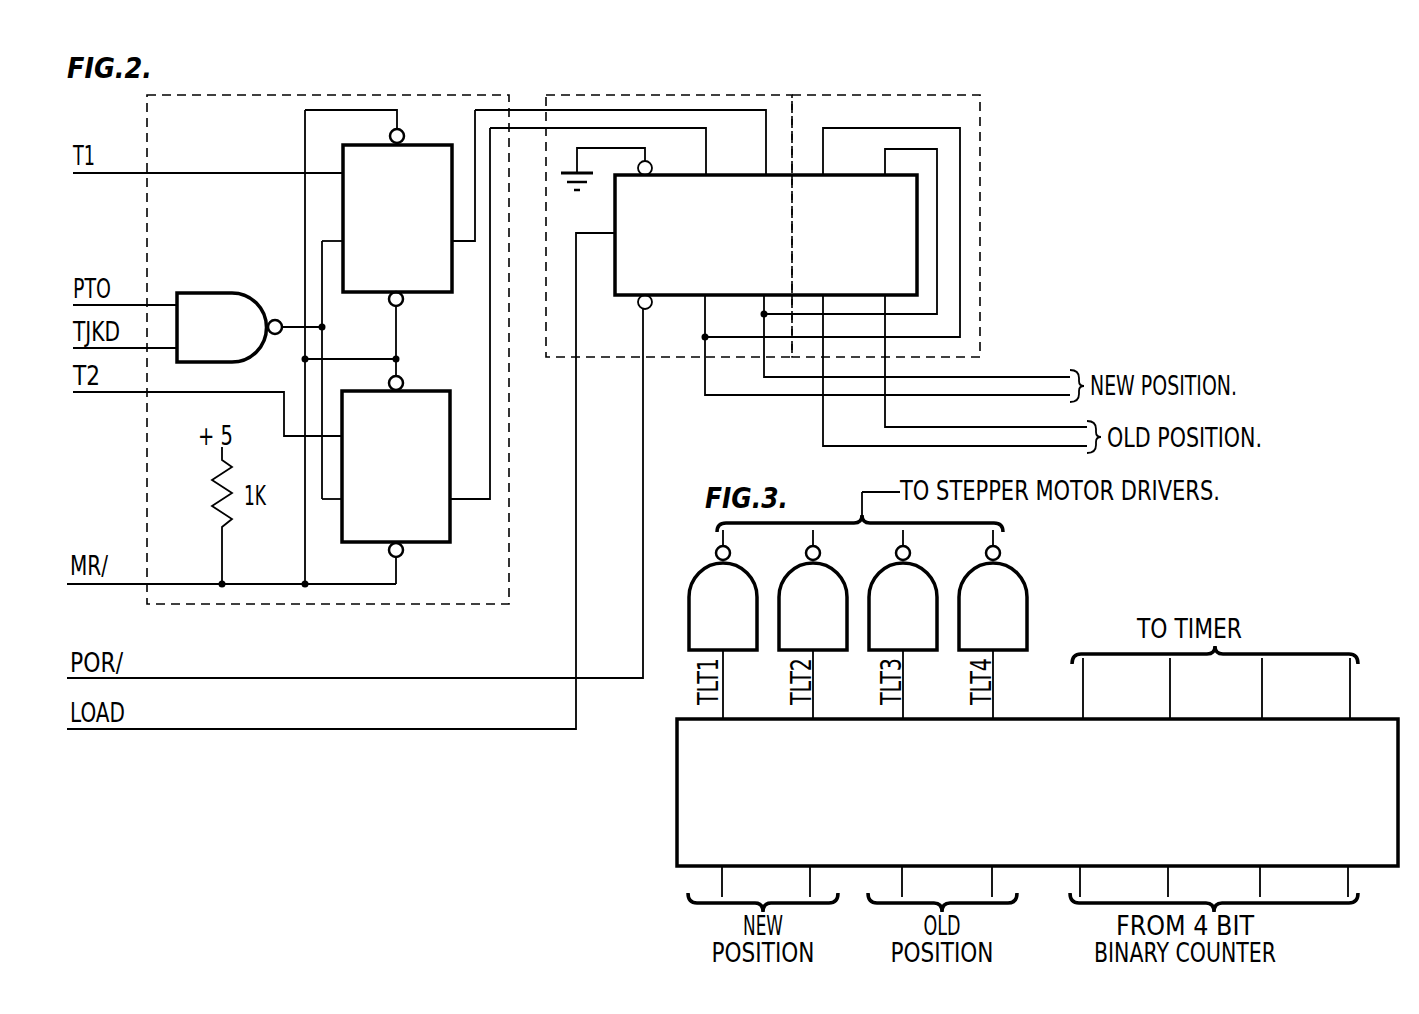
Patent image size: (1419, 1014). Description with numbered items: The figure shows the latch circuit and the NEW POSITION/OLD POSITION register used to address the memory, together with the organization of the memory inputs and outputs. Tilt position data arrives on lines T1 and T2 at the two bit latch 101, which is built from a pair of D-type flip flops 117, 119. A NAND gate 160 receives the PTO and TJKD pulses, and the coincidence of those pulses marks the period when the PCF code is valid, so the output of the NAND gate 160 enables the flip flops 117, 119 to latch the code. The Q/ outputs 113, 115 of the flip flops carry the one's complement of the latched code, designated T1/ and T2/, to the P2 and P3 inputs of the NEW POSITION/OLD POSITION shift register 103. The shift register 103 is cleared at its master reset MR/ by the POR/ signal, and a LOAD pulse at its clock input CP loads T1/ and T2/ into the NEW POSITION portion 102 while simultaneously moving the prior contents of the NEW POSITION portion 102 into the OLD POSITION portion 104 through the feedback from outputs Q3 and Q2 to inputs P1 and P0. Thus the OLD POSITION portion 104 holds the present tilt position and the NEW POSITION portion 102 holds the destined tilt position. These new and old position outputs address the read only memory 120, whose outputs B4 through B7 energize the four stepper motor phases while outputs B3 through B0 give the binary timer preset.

In FIG. 2, the two bit latch 101 is at (415, 93).
In FIG. 2, the NEW POSITION portion 102 is at (568, 95).
In FIG. 2, the NEW POSITION/OLD POSITION shift register 103 is at (649, 95).
In FIG. 2, the OLD POSITION portion 104 is at (862, 95).
In FIG. 2, the Q/ output 113 is at (528, 109).
In FIG. 2, the Q/ output 115 is at (533, 131).
In FIG. 2, the D-type flip flop 117 is at (416, 146).
In FIG. 2, the D-type flip flop 119 is at (420, 384).
In FIG. 2, the NAND gate 160 is at (232, 294).
In FIG. 3, the read only memory 120 is at (677, 800).